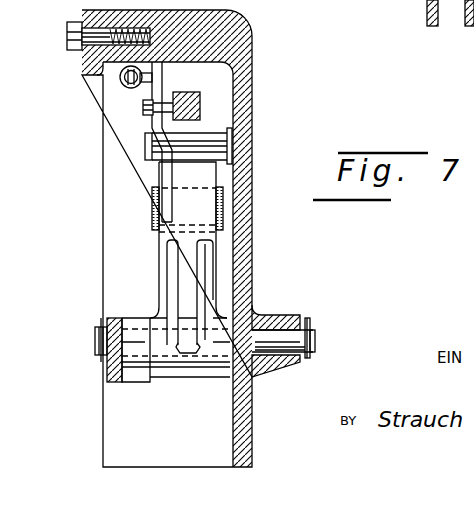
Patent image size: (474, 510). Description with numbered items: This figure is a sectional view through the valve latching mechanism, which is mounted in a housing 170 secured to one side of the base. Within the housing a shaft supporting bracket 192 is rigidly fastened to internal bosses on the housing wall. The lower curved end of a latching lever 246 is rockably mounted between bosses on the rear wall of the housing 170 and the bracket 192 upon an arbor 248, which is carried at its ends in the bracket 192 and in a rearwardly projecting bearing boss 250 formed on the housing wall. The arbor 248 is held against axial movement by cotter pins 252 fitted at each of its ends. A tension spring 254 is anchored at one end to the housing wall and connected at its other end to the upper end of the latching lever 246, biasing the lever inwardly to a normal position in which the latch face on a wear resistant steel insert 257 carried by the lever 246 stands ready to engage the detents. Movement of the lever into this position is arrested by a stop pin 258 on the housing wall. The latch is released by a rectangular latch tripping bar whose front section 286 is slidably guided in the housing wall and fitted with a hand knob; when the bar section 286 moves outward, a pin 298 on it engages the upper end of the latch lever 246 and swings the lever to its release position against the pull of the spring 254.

The housing 170 is at (245, 264).
The shaft supporting bracket 192 is at (108, 373).
The latching lever 246 is at (203, 175).
The arbor 248 is at (280, 343).
The bearing boss 250 is at (282, 365).
The cotter pins 252 is at (100, 320).
The tension spring 254 is at (124, 83).
The wear resistant steel insert 257 is at (157, 208).
The stop pin 258 is at (230, 133).
The front section of latch tripping bar 286 is at (211, 85).
The pin 298 is at (143, 110).